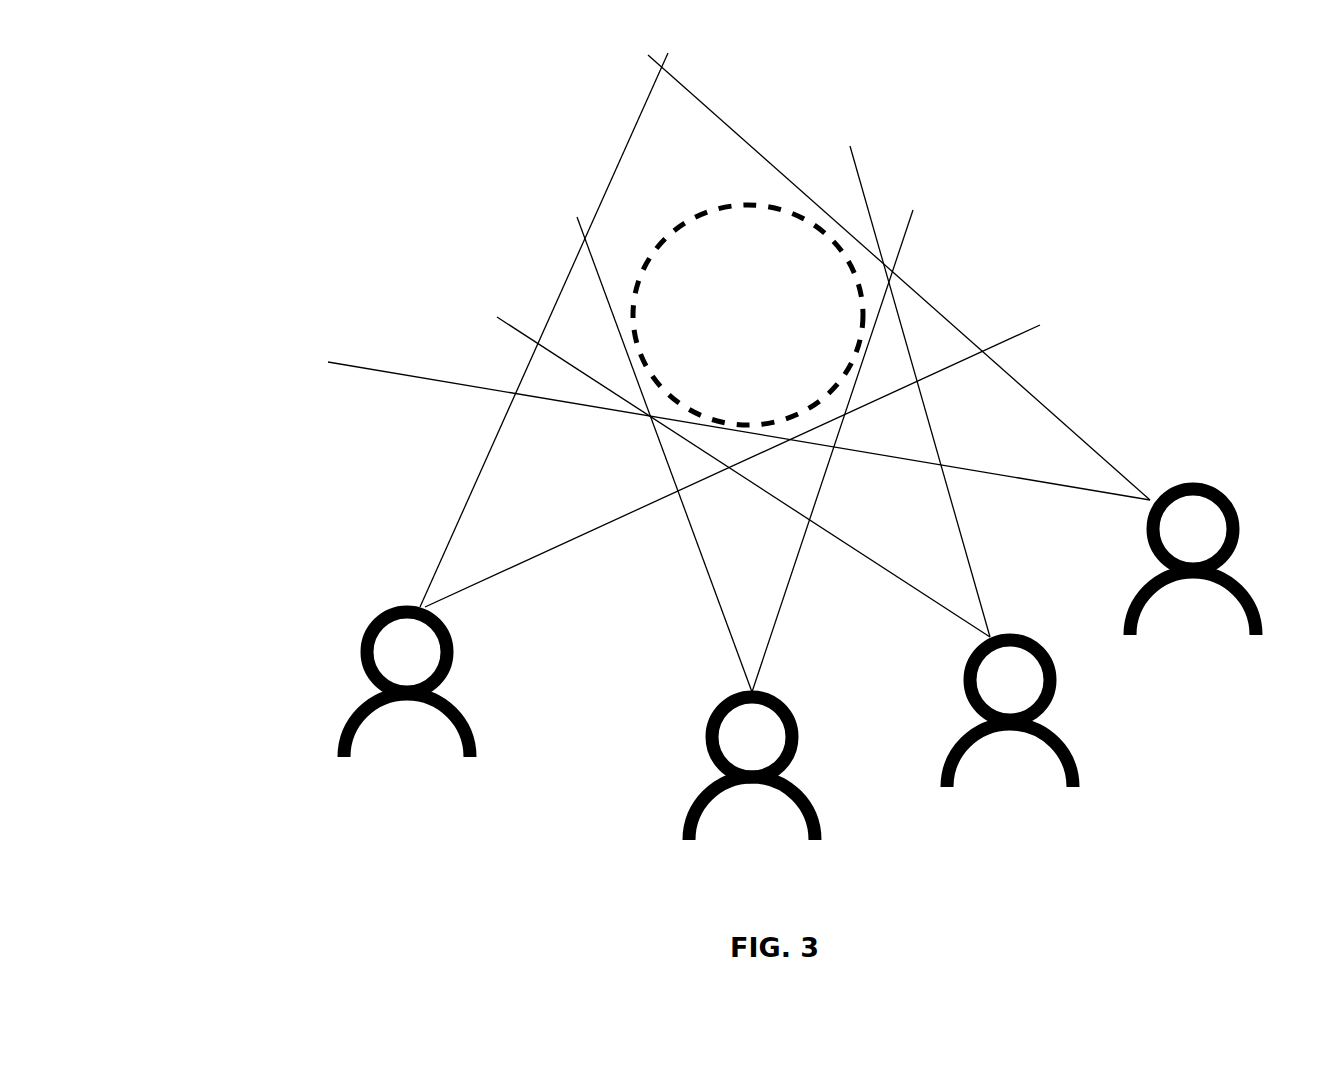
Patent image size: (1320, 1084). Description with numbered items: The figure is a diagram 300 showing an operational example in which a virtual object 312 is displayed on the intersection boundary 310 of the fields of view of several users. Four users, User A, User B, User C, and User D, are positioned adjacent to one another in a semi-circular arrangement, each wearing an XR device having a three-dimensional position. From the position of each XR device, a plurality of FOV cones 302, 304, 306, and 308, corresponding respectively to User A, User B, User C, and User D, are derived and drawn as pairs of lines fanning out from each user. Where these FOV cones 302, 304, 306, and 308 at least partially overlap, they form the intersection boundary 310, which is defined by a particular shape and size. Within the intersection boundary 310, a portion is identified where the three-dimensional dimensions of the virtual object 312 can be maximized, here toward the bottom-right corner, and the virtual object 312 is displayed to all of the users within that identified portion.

The diagram 300 is at (234, 82).
The FOV cone 302 is at (441, 557).
The FOV cone 304 is at (740, 667).
The FOV cone 306 is at (938, 605).
The FOV cone 308 is at (1097, 504).
The intersection boundary 310 is at (677, 313).
The virtual object 312 is at (708, 212).